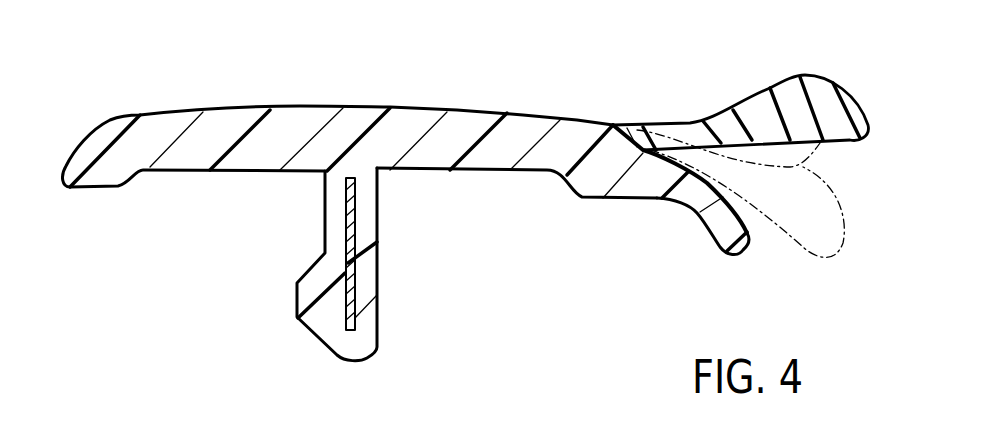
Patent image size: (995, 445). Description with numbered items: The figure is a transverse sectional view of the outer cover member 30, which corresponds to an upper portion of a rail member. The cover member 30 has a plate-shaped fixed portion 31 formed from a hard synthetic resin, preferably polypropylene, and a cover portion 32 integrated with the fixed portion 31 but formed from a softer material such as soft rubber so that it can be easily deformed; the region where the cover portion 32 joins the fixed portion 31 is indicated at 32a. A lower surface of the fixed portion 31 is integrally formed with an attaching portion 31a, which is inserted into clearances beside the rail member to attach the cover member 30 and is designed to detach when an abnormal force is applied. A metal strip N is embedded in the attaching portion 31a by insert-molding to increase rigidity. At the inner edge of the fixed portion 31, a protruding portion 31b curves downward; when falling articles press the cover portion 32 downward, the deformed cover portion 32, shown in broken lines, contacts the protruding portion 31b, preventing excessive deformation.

The outer cover member 30 is at (588, 76).
The fixed portion 31 is at (323, 130).
The attaching portion 31a is at (325, 318).
The protruding portion 31b is at (692, 190).
The cover portion 32 is at (807, 160).
The base end of tongue piece 32a is at (647, 128).
The metal strip N is at (350, 227).